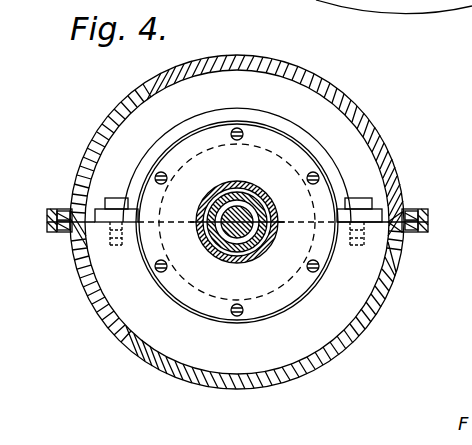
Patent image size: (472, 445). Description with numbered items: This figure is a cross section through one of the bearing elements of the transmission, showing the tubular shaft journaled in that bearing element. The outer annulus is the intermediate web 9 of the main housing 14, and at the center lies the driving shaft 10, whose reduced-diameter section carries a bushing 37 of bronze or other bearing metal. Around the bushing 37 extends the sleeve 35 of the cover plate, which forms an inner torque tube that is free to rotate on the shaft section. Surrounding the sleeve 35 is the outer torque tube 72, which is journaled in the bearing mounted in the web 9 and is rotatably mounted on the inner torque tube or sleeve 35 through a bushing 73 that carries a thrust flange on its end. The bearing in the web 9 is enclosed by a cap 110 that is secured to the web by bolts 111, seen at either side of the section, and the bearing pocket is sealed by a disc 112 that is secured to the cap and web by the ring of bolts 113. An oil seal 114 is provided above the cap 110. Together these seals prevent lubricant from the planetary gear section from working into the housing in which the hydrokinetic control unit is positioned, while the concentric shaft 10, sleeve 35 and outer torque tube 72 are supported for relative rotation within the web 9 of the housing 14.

The intermediate web 9 is at (377, 293).
The main housing 14 is at (236, 392).
The driving shaft 10 is at (240, 233).
The sleeve 35 is at (216, 227).
The bushing 37 is at (233, 208).
The outer torque tube 72 is at (278, 223).
The bushing 73 is at (208, 252).
The cap 110 is at (332, 163).
The bolts 111 is at (357, 198).
The disc 112 is at (193, 281).
The bolts 113 is at (246, 153).
The oil seal 114 is at (293, 121).